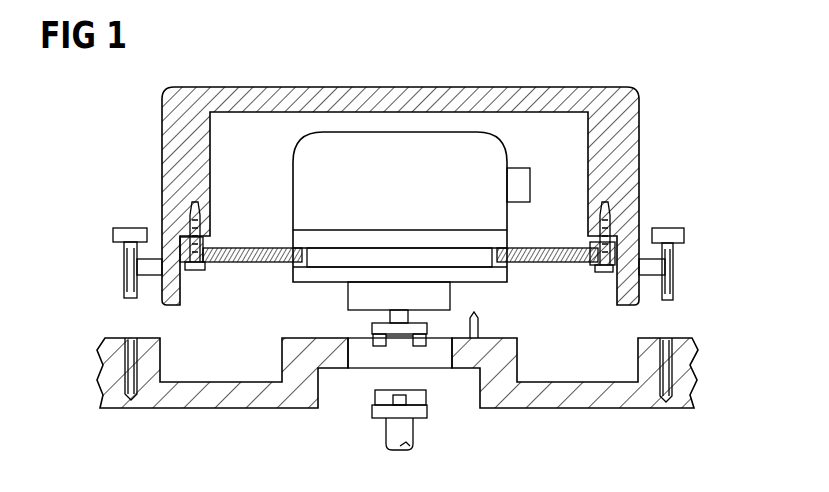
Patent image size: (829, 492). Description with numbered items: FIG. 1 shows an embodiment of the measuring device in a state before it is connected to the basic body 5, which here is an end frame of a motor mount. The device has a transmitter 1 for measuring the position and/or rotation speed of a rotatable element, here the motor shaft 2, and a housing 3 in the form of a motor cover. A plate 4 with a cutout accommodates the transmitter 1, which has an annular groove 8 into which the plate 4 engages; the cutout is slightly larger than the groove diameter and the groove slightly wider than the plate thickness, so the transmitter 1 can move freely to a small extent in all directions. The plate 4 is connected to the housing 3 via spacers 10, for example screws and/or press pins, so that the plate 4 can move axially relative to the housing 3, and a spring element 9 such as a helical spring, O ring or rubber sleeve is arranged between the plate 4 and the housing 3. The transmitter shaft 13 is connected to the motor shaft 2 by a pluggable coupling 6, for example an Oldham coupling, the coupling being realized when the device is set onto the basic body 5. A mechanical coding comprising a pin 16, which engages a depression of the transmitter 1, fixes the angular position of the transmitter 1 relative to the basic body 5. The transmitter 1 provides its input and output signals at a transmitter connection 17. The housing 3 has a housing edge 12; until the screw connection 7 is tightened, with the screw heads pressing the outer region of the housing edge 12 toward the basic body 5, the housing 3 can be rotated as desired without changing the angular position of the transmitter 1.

The transmitter 1 is at (402, 178).
The motor shaft 2 is at (410, 428).
The housing 3 is at (640, 130).
The plate 4 is at (553, 255).
The basic body 5 is at (597, 398).
The coupling 6 is at (372, 332).
The screw connection 7 is at (128, 267).
The annular groove 8 is at (460, 256).
The spring element 9 is at (214, 248).
The spacers 10 is at (188, 232).
The housing edge 12 is at (152, 265).
The transmitter shaft 13 is at (393, 316).
The pin 16 is at (477, 325).
The transmitter connection 17 is at (527, 180).